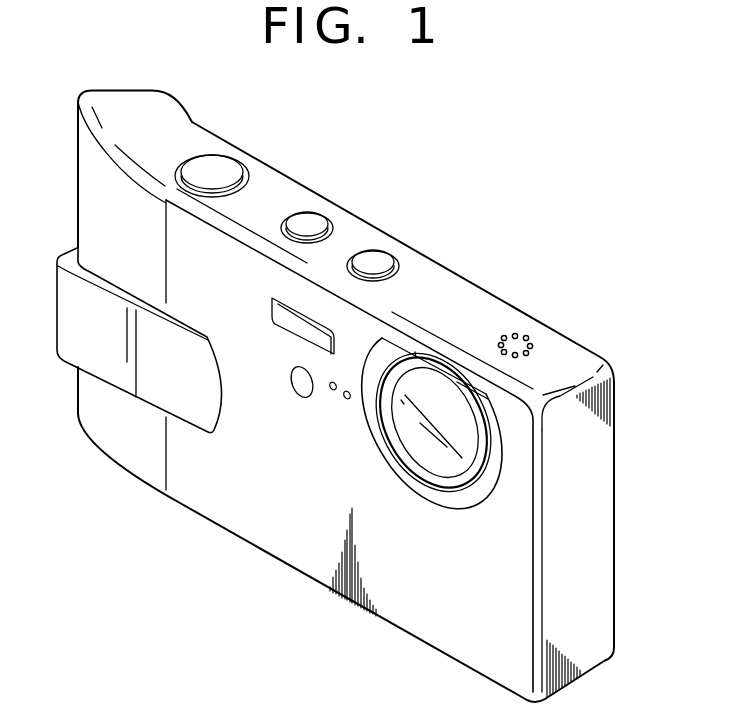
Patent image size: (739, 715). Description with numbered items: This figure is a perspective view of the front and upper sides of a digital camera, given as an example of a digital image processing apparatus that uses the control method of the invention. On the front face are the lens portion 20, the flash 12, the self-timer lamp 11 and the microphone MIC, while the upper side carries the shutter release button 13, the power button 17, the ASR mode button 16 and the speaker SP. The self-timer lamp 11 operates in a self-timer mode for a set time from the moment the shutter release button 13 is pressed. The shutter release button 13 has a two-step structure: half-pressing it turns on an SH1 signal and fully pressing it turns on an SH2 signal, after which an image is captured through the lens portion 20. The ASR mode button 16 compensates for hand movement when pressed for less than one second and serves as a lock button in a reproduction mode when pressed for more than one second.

The self-timer lamp 11 is at (297, 388).
The flash 12 is at (283, 335).
The shutter release button 13 is at (225, 168).
The ASR mode button 16 is at (378, 262).
The power button 17 is at (312, 222).
The lens portion 20 is at (444, 458).
The speaker SP is at (527, 338).
The microphone MIC is at (345, 400).